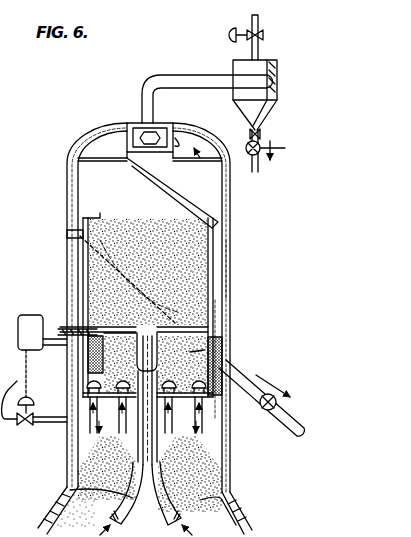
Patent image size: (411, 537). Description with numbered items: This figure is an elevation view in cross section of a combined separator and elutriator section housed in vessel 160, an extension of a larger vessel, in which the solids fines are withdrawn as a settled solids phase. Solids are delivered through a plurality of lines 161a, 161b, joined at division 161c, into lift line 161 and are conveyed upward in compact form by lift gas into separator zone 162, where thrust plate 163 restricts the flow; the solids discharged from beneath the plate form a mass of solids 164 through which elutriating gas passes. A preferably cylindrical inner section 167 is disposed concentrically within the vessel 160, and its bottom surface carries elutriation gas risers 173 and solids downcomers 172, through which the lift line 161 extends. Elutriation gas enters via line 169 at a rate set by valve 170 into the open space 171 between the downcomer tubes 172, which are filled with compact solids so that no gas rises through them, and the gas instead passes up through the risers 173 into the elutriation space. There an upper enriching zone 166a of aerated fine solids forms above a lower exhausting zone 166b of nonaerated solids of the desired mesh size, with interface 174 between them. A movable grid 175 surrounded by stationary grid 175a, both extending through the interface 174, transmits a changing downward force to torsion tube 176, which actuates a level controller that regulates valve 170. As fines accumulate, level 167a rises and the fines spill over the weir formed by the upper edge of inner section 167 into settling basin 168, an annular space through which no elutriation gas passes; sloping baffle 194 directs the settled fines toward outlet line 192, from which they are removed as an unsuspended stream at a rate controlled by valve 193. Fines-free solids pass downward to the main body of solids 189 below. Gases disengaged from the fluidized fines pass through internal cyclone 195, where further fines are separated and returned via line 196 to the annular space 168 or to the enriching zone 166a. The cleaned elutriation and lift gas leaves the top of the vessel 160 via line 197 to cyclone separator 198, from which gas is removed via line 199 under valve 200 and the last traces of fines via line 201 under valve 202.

The vessel 160 is at (67, 162).
The lift line 161 is at (143, 438).
The line 161a is at (70, 490).
The line 161b is at (222, 518).
The division 161c is at (207, 469).
The separator zone 162 is at (196, 327).
The thrust plate 163 is at (178, 312).
The mass of solids 164 is at (194, 353).
The enriching zone 166a is at (163, 296).
The exhausting zone 166b is at (208, 357).
The inner section 167 is at (212, 248).
The level 167a is at (100, 215).
The settling basin 168 is at (230, 272).
The line 169 is at (12, 390).
The valve 170 is at (24, 425).
The open space 171 is at (212, 420).
The downcomer tubes 172 is at (140, 442).
The elutriation gas risers 173 is at (97, 383).
The interface 174 is at (123, 330).
The movable grid 175 is at (97, 353).
The stationary grid 175a is at (45, 343).
The torsion tube 176 is at (66, 328).
The main body of solids 189 is at (205, 500).
The line 192 is at (291, 414).
The valve 193 is at (272, 411).
The sloping baffle 194 is at (176, 142).
The internal cyclone 195 is at (125, 144).
The line 196 is at (215, 183).
The line 197 is at (208, 62).
The cyclone separator 198 is at (268, 97).
The line 199 is at (258, 28).
The valve 200 is at (263, 40).
The line 201 is at (262, 134).
The valve 202 is at (285, 152).